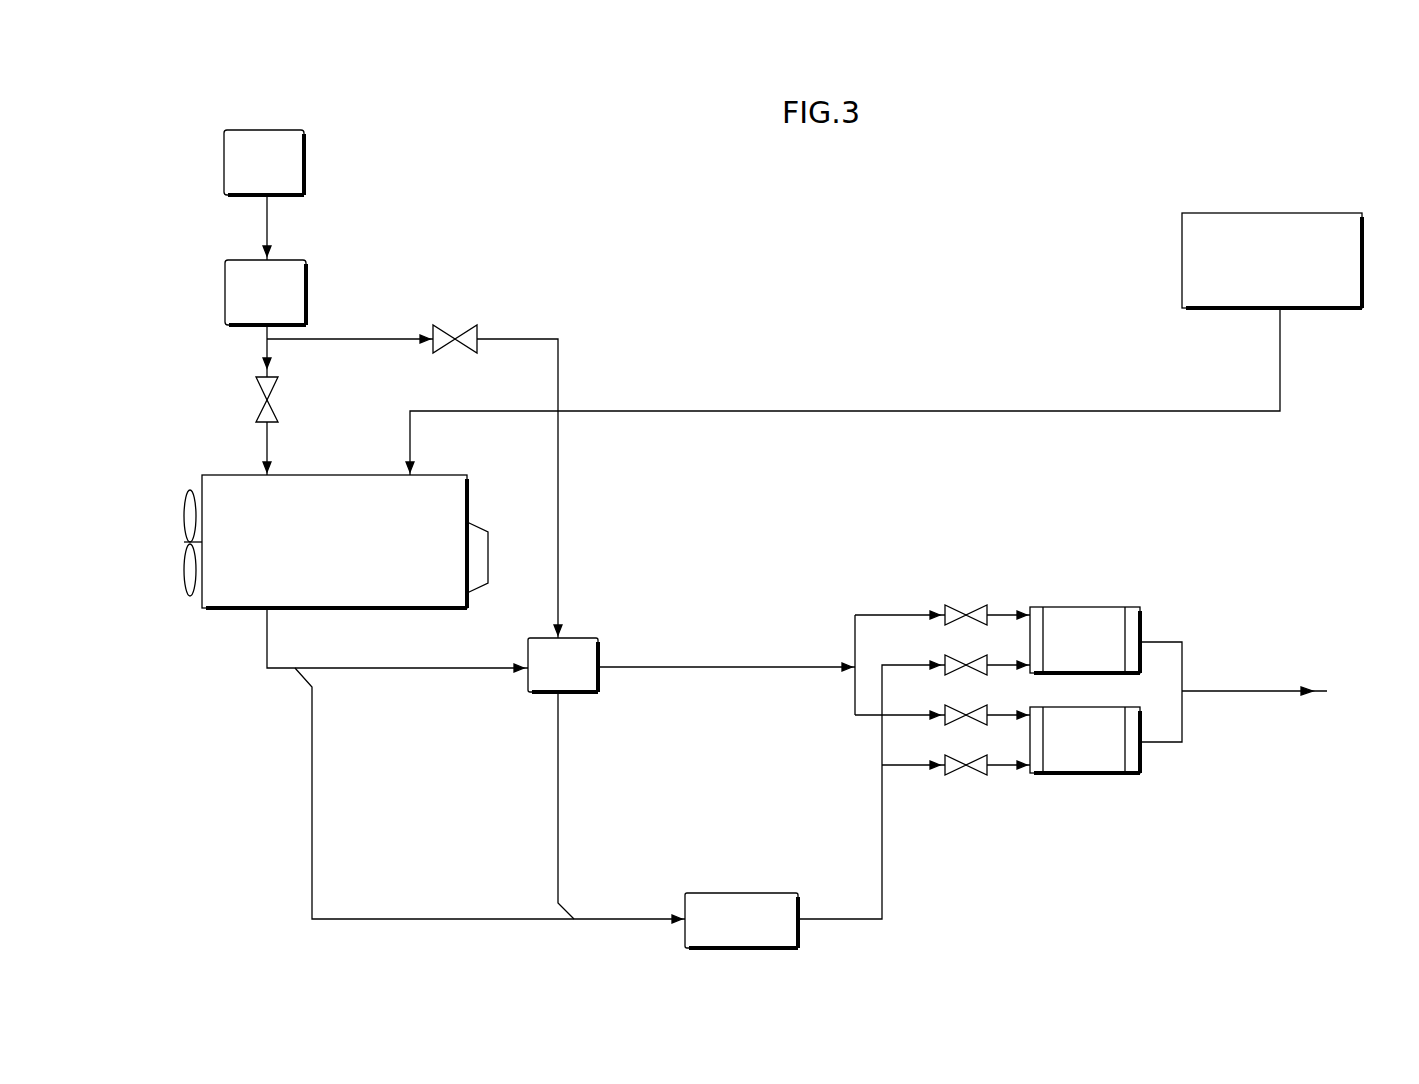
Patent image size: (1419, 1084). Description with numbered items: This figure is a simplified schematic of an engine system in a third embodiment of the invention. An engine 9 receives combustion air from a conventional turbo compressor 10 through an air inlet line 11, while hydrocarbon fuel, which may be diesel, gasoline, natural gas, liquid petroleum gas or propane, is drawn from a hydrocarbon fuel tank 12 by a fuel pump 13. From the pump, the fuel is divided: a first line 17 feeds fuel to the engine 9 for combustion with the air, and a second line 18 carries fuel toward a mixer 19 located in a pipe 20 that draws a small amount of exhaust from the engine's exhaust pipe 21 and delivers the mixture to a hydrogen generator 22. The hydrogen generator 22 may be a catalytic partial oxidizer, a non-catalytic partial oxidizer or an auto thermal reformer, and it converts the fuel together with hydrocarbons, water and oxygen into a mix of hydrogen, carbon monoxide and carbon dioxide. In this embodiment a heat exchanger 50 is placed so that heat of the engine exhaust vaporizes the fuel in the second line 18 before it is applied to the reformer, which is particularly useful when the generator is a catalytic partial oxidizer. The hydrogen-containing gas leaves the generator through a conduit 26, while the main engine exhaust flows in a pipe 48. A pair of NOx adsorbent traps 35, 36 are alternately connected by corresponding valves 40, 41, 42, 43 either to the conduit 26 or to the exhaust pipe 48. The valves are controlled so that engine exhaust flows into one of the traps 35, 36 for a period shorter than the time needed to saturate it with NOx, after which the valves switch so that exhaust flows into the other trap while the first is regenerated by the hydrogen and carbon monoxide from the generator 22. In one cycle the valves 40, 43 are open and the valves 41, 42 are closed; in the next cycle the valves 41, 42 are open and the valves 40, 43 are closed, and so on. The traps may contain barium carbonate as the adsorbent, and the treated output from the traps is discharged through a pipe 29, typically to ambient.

The engine 9 is at (320, 572).
The turbo compressor 10 is at (1272, 213).
The air inlet line 11 is at (857, 411).
The hydrocarbon fuel tank 12 is at (262, 128).
The fuel pump 13 is at (245, 258).
The first line 17 is at (265, 437).
The second line 18 is at (558, 488).
The mixer 19 is at (575, 918).
The pipe 20 is at (312, 815).
The exhaust pipe 21 is at (410, 668).
The hydrogen generator 22 is at (748, 893).
The conduit 26 is at (882, 835).
The pipe 29 is at (1222, 691).
The NOx adsorbent trap 35 is at (1115, 606).
The NOx adsorbent trap 36 is at (1115, 706).
The valve 40 is at (974, 604).
The valve 41 is at (974, 654).
The valve 42 is at (974, 704).
The valve 43 is at (974, 754).
The pipe 48 is at (705, 667).
The heat exchanger 50 is at (588, 638).